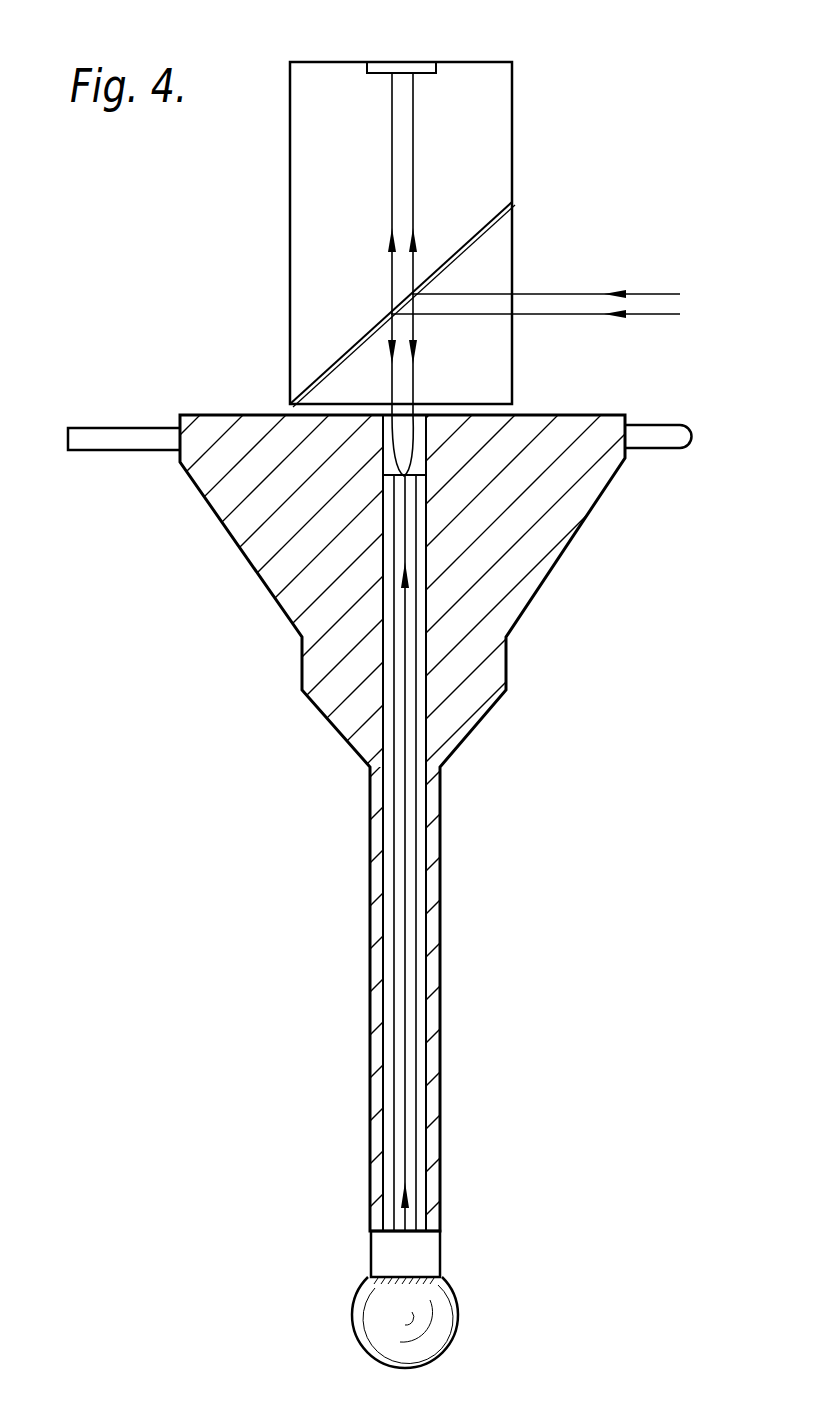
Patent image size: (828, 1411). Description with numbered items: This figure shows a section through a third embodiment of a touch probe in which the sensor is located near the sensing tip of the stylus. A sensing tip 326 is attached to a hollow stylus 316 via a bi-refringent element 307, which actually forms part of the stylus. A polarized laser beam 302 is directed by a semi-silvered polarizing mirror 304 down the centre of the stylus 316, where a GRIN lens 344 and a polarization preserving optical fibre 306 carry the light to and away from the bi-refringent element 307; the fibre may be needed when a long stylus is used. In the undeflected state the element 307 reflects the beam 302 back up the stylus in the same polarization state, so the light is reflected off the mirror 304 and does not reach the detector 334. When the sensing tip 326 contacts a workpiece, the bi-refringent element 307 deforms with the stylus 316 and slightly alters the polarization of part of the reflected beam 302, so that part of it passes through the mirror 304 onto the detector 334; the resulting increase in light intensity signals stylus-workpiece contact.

The polarized laser beam 302 is at (648, 302).
The semi-silvered polarizing mirror 304 is at (472, 240).
The detector 334 is at (402, 62).
The GRIN lens 344 is at (412, 467).
The stylus 316 is at (437, 913).
The polarization preserving optical fibre 306 is at (405, 1095).
The bi-refringent element 307 is at (417, 1250).
The sensing tip 326 is at (446, 1318).